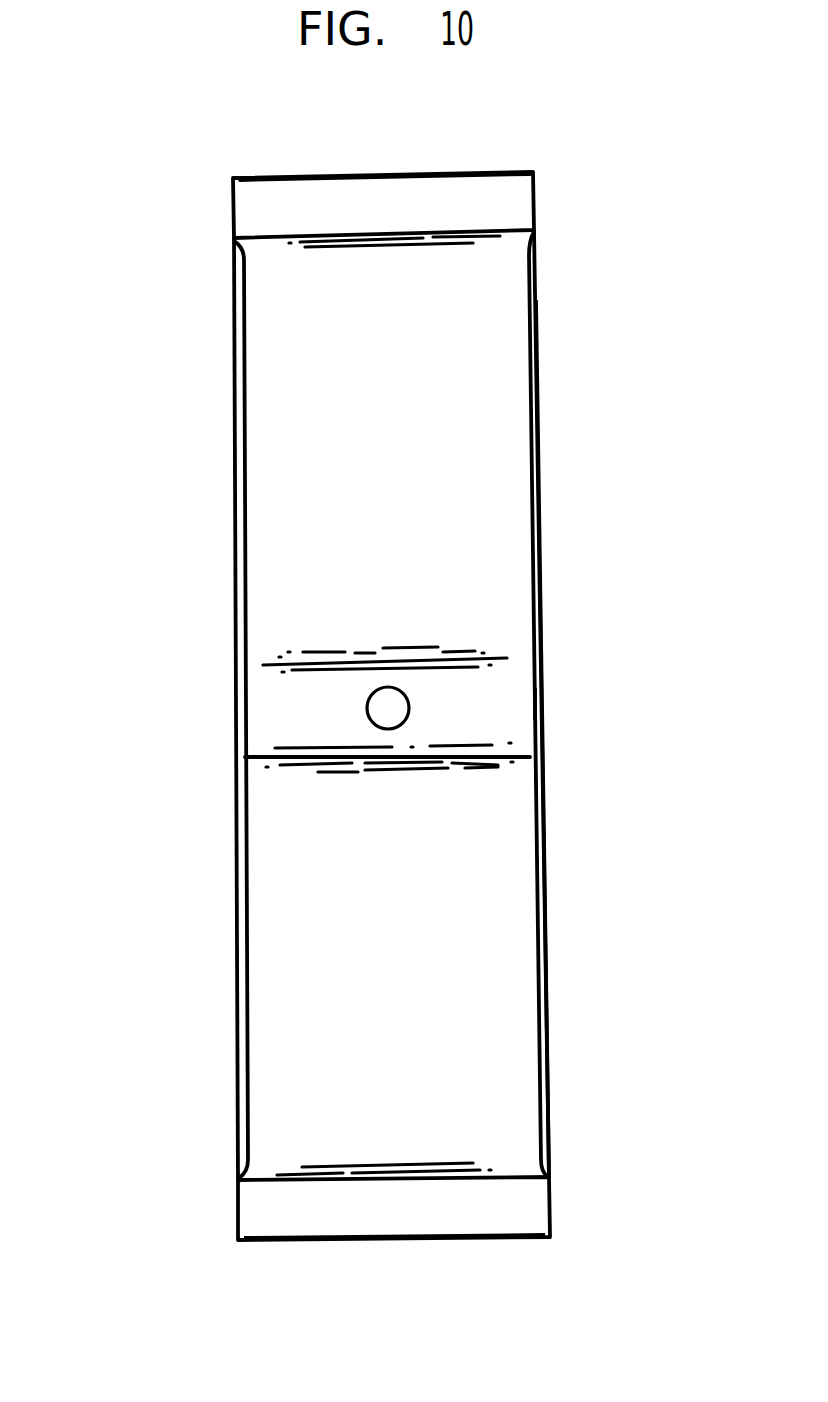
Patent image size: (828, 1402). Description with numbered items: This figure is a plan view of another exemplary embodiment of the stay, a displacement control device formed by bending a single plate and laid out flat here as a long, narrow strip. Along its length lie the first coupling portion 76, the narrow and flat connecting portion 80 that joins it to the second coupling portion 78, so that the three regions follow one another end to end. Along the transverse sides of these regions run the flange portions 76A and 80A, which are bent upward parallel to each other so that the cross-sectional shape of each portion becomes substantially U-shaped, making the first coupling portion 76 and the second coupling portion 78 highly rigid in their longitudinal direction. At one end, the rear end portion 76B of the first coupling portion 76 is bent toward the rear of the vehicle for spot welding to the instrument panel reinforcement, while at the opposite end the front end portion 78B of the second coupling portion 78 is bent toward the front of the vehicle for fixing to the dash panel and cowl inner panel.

The first coupling portion 76 is at (231, 492).
The flange portion 76A is at (532, 445).
The rear end portion 76B is at (327, 200).
The second coupling portion 78 is at (552, 992).
The front end portion 78B is at (355, 1217).
The connecting portion 80 is at (297, 731).
The flange portion 80A is at (536, 717).